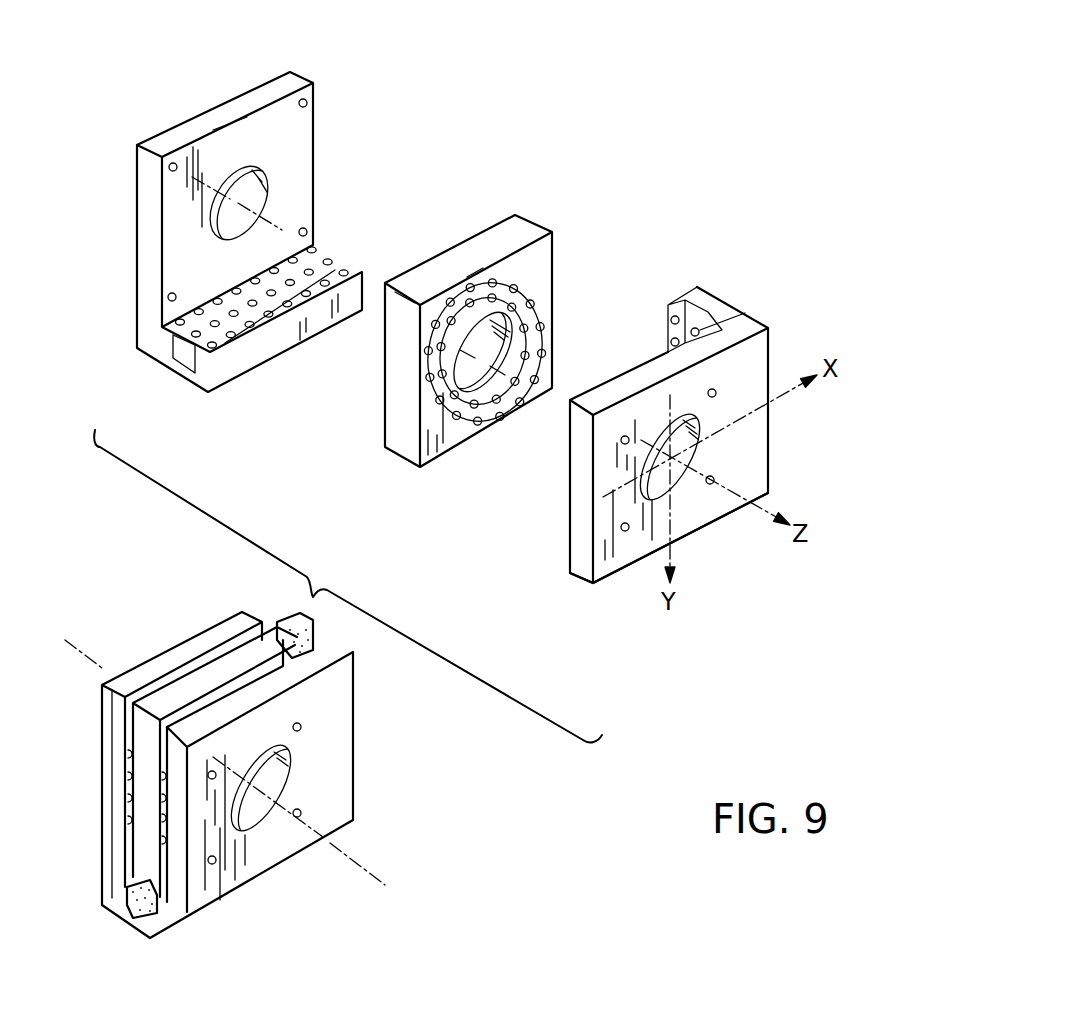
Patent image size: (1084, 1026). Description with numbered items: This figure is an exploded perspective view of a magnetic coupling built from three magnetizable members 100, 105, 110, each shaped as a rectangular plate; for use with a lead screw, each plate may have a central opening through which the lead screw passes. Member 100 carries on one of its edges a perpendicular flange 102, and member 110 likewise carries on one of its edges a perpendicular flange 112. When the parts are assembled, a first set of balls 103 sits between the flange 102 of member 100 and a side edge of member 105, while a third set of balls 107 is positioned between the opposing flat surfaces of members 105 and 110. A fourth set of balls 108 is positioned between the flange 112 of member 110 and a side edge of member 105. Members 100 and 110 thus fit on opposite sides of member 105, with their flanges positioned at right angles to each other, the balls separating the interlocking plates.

The magnetizable member 100 is at (267, 249).
The perpendicular flange 102 is at (203, 373).
The first set of balls 103 is at (317, 240).
The magnetizable member 105 is at (485, 355).
The third set of balls 107 is at (476, 426).
The fourth set of balls 108 is at (668, 307).
The magnetizable member 110 is at (566, 573).
The perpendicular flange 112 is at (661, 428).